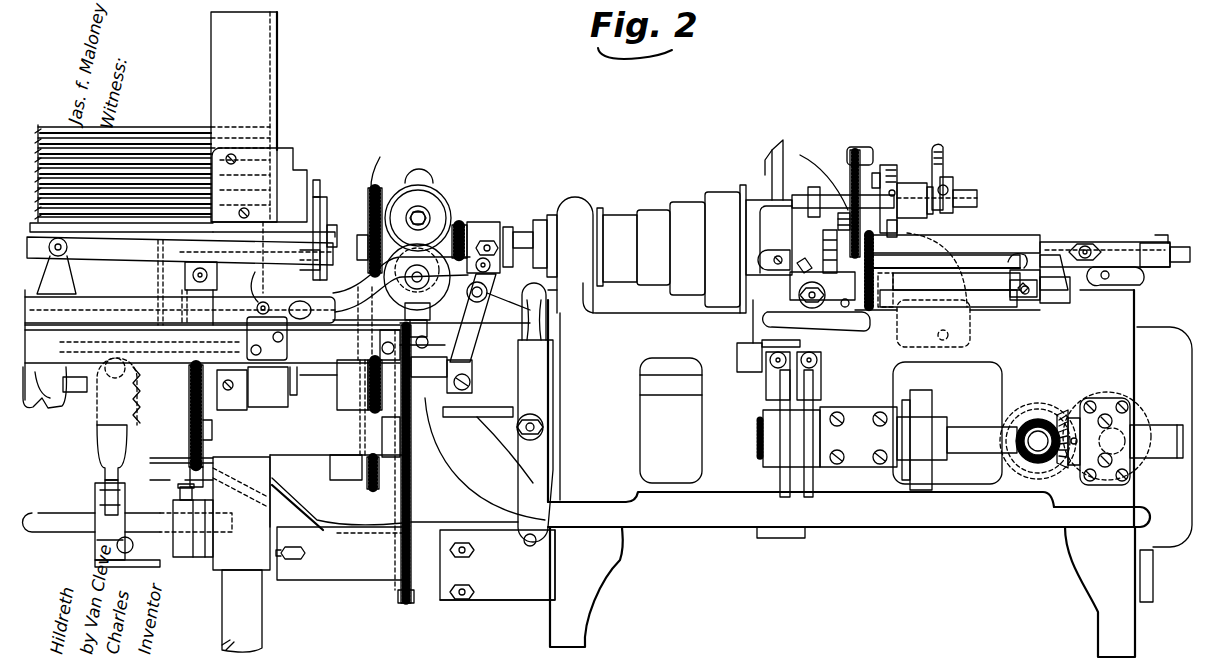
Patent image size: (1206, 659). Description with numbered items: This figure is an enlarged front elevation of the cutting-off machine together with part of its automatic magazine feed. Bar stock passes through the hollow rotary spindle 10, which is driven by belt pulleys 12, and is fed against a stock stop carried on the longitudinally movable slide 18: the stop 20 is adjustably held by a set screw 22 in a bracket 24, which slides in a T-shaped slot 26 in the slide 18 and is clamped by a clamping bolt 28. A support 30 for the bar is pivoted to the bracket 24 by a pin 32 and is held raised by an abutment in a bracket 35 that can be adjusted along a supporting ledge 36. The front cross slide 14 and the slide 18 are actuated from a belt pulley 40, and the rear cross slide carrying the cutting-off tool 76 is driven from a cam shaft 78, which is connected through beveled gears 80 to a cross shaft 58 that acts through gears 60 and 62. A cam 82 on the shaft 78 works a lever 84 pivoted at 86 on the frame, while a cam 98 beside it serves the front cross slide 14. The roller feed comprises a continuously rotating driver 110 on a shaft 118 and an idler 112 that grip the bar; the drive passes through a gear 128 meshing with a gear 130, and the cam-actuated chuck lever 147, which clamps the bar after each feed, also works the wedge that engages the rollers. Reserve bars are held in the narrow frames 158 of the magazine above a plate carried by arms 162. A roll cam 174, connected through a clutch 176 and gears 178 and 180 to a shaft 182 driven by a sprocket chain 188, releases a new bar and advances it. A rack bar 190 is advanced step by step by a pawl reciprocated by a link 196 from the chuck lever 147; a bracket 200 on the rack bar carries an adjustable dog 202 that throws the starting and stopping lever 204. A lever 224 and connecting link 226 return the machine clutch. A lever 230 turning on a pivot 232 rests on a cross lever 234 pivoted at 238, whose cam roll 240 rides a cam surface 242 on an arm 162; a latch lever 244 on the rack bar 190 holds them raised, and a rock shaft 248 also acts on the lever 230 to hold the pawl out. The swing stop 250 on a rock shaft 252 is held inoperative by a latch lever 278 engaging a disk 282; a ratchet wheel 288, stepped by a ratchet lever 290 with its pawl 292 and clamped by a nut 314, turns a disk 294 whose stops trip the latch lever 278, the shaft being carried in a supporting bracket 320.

The hollow rotary spindle 10 is at (519, 236).
The belt pulleys 12 is at (667, 208).
The front cross slide 14 is at (792, 287).
The longitudinally movable slide 18 is at (987, 235).
The stock stop 20 is at (1147, 244).
The set screw 22 is at (1163, 243).
The bracket 24 is at (1122, 243).
The T-shaped slot 26 is at (1008, 255).
The clamping bolt 28 is at (1087, 244).
The support 30 is at (1063, 262).
The pin 32 is at (1030, 263).
The bracket 35 is at (1010, 300).
The supporting ledge 36 is at (1052, 303).
The belt pulley 40 is at (347, 473).
The cross shaft 58 is at (1037, 420).
The gear 60 is at (1043, 407).
The gear 62 is at (1140, 420).
The cutting-off tool 76 is at (820, 237).
The cam shaft 78 is at (963, 433).
The beveled gears 80 is at (1053, 417).
The cam 82 is at (785, 474).
The lever 84 is at (766, 380).
The pivot 86 is at (737, 358).
The cam 98 is at (808, 485).
The driver 110 is at (422, 197).
The idler 112 is at (455, 224).
The shaft 118 is at (420, 218).
The gear 128 is at (384, 164).
The gear 130 is at (377, 480).
The chuck lever 147 is at (473, 333).
The narrow frames 158 is at (259, 117).
The arms 162 is at (167, 270).
The roll cam 174 is at (32, 402).
The clutch 176 is at (143, 385).
The gear 178 is at (193, 382).
The gear 180 is at (207, 434).
The shaft 182 is at (187, 432).
The sprocket chain 188 is at (411, 505).
The rack bar 190 is at (350, 355).
The link 196 is at (350, 325).
The bracket 200 is at (373, 387).
The adjustable dog 202 is at (535, 368).
The starting and stopping lever 204 is at (537, 385).
The lever 224 is at (128, 467).
The connecting link 226 is at (321, 523).
The lever 230 is at (120, 252).
The pivot 232 is at (61, 243).
The cross lever 234 is at (333, 225).
The pivot 238 is at (333, 250).
The cam roll 240 is at (324, 212).
The cam surface 242 is at (317, 180).
The latch lever 244 is at (260, 277).
The rock shaft 248 is at (97, 517).
The swing stop 250 is at (944, 148).
The rock shaft 252 is at (970, 197).
The latch lever 278 is at (897, 160).
The disk 282 is at (905, 175).
The ratchet wheel 288 is at (845, 213).
The ratchet lever 290 is at (862, 150).
The pawl 292 is at (852, 177).
The disk 294 is at (885, 165).
The nut 314 is at (810, 174).
The supporting bracket 320 is at (919, 188).